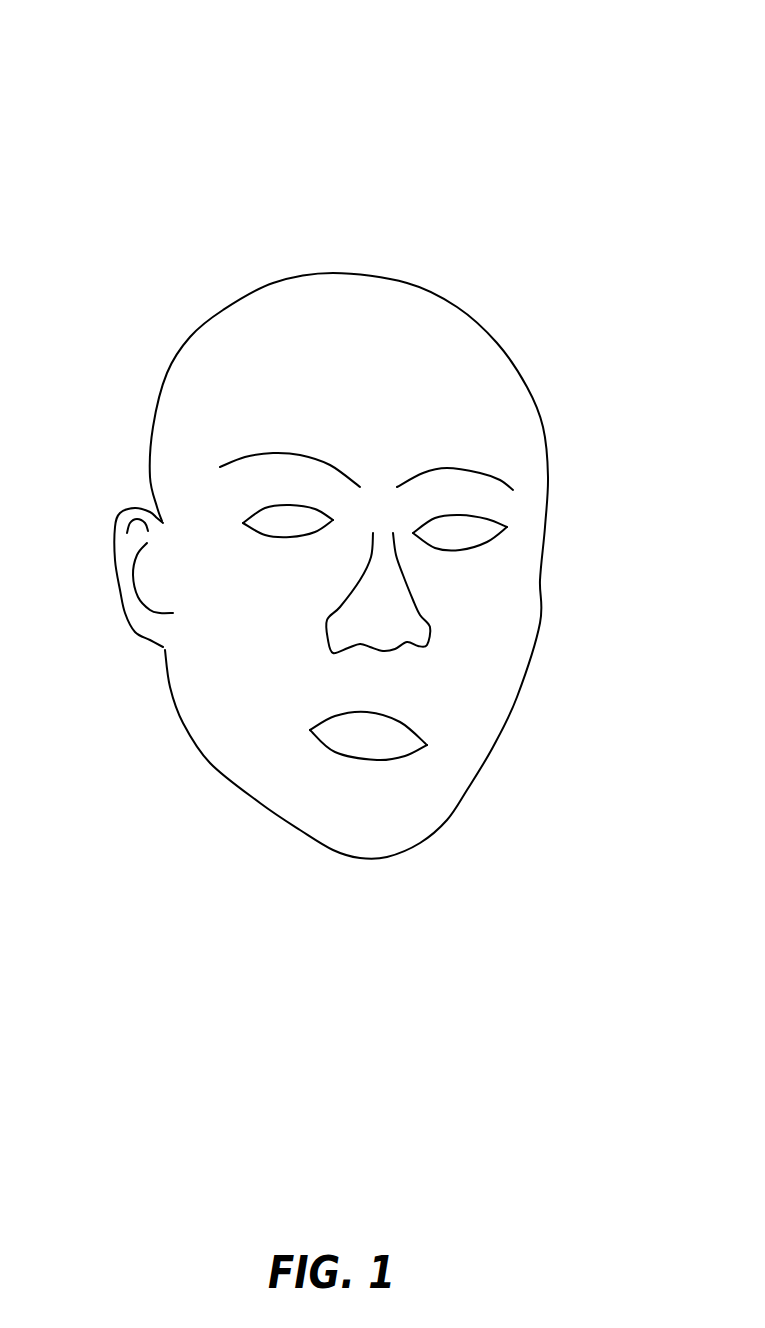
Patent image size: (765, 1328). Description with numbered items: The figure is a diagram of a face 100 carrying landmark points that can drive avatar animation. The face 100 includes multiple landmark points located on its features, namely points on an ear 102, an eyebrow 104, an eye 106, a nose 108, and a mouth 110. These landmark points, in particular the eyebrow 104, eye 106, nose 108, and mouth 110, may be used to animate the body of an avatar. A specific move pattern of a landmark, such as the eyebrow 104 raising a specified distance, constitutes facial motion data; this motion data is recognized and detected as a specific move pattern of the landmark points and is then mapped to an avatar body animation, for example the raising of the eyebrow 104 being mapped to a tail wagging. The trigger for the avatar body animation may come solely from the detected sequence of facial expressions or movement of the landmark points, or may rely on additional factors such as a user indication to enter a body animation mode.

The face 100 is at (617, 59).
The ear 102 is at (137, 507).
The eyebrow 104 is at (455, 468).
The eye 106 is at (502, 528).
The nose 108 is at (430, 627).
The mouth 110 is at (430, 747).